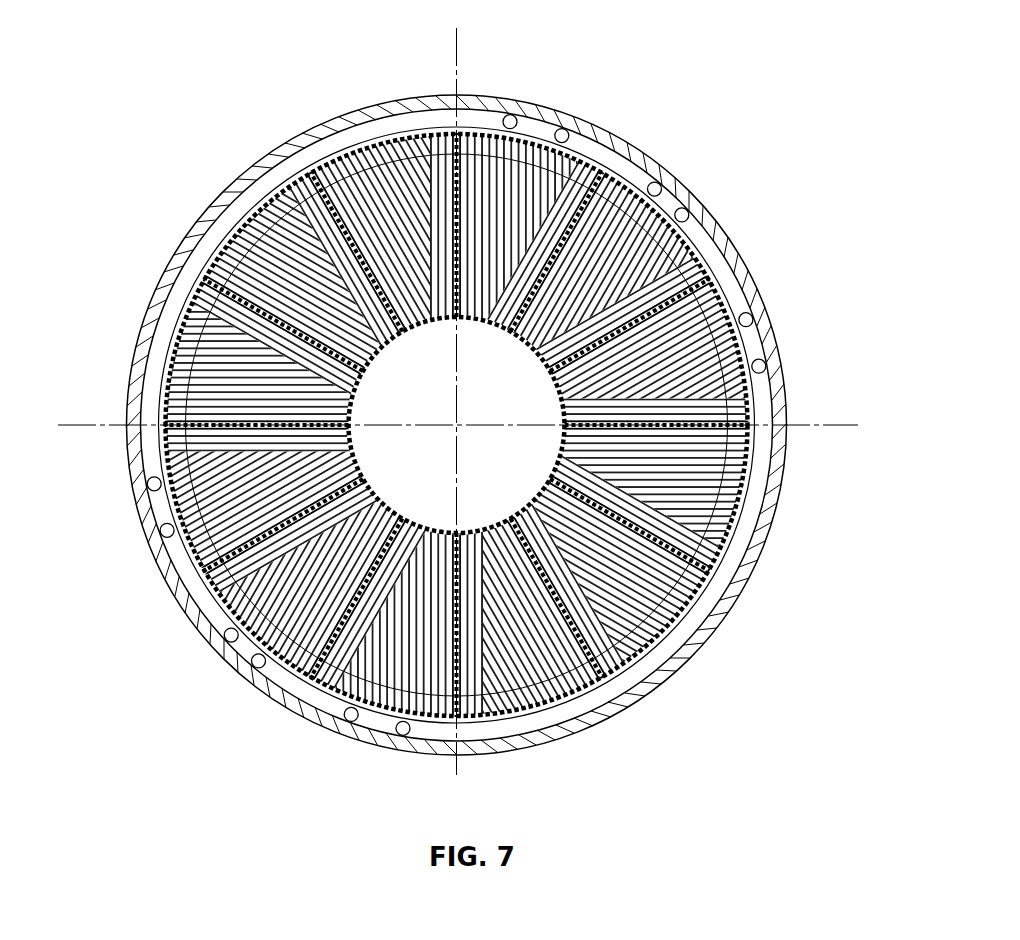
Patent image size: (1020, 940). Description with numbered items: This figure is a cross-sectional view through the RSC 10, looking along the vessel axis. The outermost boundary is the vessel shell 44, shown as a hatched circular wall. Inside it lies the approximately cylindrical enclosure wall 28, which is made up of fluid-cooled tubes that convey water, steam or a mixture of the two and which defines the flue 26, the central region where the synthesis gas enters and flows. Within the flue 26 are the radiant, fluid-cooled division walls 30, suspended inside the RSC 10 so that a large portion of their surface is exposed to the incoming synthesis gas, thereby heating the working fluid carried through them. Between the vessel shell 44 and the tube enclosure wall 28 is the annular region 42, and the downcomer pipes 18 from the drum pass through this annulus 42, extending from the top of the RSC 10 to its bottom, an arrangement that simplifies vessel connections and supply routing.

The RSC 10 is at (631, 81).
The downcomer pipes 18 is at (335, 722).
The flue 26 is at (503, 411).
The enclosure wall 28 is at (214, 624).
The division walls 30 is at (228, 297).
The annular region 42 is at (715, 604).
The vessel shell 44 is at (646, 139).